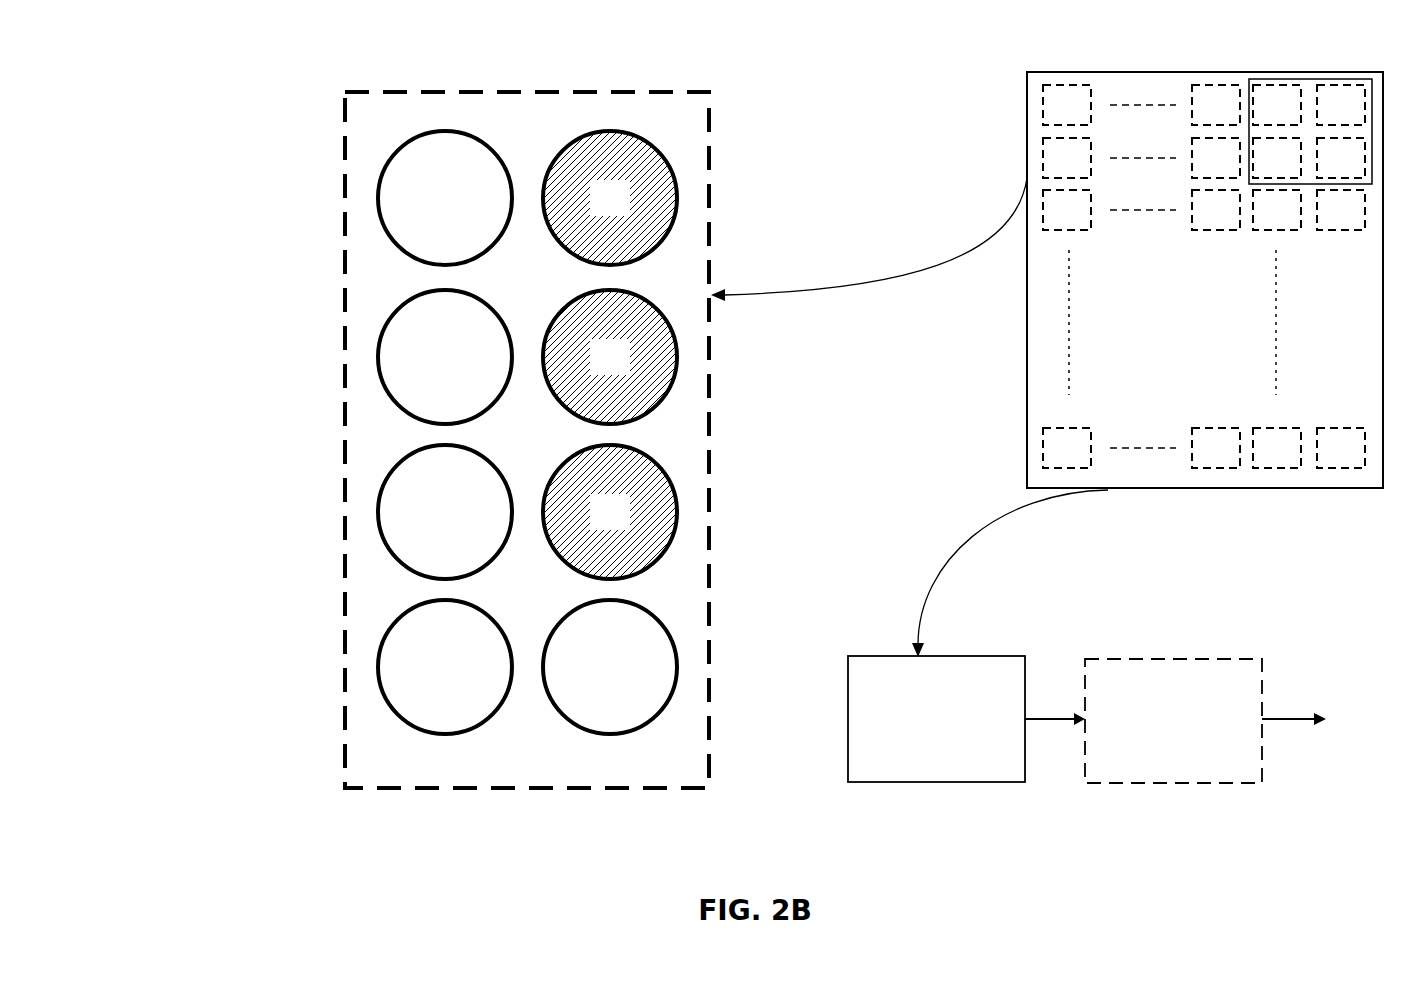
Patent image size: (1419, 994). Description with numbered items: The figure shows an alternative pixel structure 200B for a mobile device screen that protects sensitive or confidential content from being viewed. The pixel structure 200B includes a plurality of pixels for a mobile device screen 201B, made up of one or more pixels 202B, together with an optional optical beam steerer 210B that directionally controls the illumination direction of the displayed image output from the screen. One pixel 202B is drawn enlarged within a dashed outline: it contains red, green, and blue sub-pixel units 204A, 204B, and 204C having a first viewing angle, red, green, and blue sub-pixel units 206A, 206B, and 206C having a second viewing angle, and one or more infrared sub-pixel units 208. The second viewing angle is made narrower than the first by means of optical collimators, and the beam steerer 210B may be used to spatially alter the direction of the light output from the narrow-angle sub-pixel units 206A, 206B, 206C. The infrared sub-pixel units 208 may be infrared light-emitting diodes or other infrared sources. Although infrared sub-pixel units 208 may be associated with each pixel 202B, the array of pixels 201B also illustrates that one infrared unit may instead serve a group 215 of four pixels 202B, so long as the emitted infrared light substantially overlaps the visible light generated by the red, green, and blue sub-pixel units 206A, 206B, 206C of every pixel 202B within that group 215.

The pixel structure 200B is at (239, 74).
The plurality of pixels for a mobile device screen 201B is at (1194, 508).
The pixel 202B is at (690, 92).
The red sub-pixel unit 204A is at (378, 198).
The green sub-pixel unit 204B is at (378, 357).
The blue sub-pixel unit 204C is at (378, 512).
The red sub-pixel unit 206A is at (677, 197).
The green sub-pixel unit 206B is at (677, 354).
The blue sub-pixel unit 206C is at (677, 510).
The infrared sub-pixel unit 208 is at (612, 735).
The optical beam steerer 210B is at (1153, 798).
The group 215 is at (1313, 80).